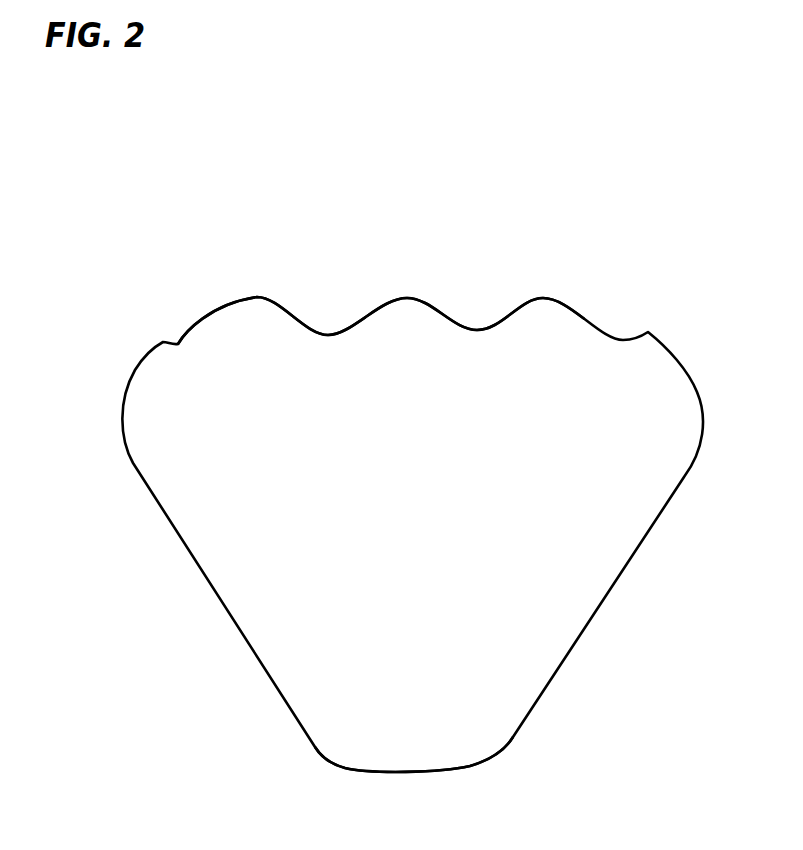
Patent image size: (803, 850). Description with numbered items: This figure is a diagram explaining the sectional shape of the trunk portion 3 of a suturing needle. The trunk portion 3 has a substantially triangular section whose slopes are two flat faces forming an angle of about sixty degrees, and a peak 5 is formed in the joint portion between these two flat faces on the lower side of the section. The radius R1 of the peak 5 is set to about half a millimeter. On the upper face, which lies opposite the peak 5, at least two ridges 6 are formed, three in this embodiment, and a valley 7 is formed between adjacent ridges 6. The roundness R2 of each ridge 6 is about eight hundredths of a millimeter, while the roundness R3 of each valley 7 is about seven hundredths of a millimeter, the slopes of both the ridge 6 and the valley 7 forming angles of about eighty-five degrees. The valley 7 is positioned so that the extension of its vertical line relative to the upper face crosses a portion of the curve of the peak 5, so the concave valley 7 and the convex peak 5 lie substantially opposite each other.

The trunk portion 3 is at (182, 605).
The peak 5 is at (423, 771).
The ridges 6 is at (257, 296).
The valley 7 is at (335, 332).
The radius of the peak R1 is at (410, 770).
The roundness of the ridge R2 is at (257, 300).
The roundness of the valley R3 is at (328, 333).